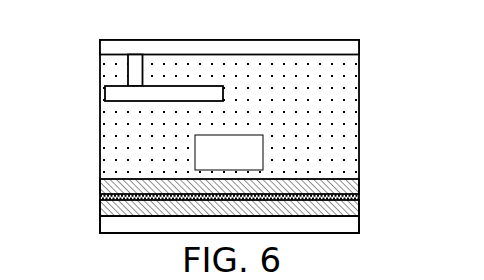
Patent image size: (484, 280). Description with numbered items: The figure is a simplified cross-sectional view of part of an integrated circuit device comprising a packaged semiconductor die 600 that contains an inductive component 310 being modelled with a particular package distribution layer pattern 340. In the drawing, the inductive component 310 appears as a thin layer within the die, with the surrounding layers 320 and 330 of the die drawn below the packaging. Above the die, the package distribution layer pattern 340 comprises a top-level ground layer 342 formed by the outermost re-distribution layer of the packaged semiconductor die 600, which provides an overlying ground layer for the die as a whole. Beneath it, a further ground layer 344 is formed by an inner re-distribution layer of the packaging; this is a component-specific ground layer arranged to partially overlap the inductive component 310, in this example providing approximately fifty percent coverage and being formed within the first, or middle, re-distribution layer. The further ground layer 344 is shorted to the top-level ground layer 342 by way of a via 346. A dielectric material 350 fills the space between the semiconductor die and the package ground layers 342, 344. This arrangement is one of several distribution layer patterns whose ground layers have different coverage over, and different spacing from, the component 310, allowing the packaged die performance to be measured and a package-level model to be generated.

The packaged semiconductor die 600 is at (377, 171).
The inductive component 310 is at (359, 198).
The bonding layer 320 is at (100, 193).
The substrate 330 is at (100, 226).
The package distribution layer pattern 340 is at (232, 93).
The top-level ground layer 342 is at (100, 47).
The further ground layer 344 is at (105, 92).
The via 346 is at (128, 77).
The dielectric material 350 is at (255, 164).